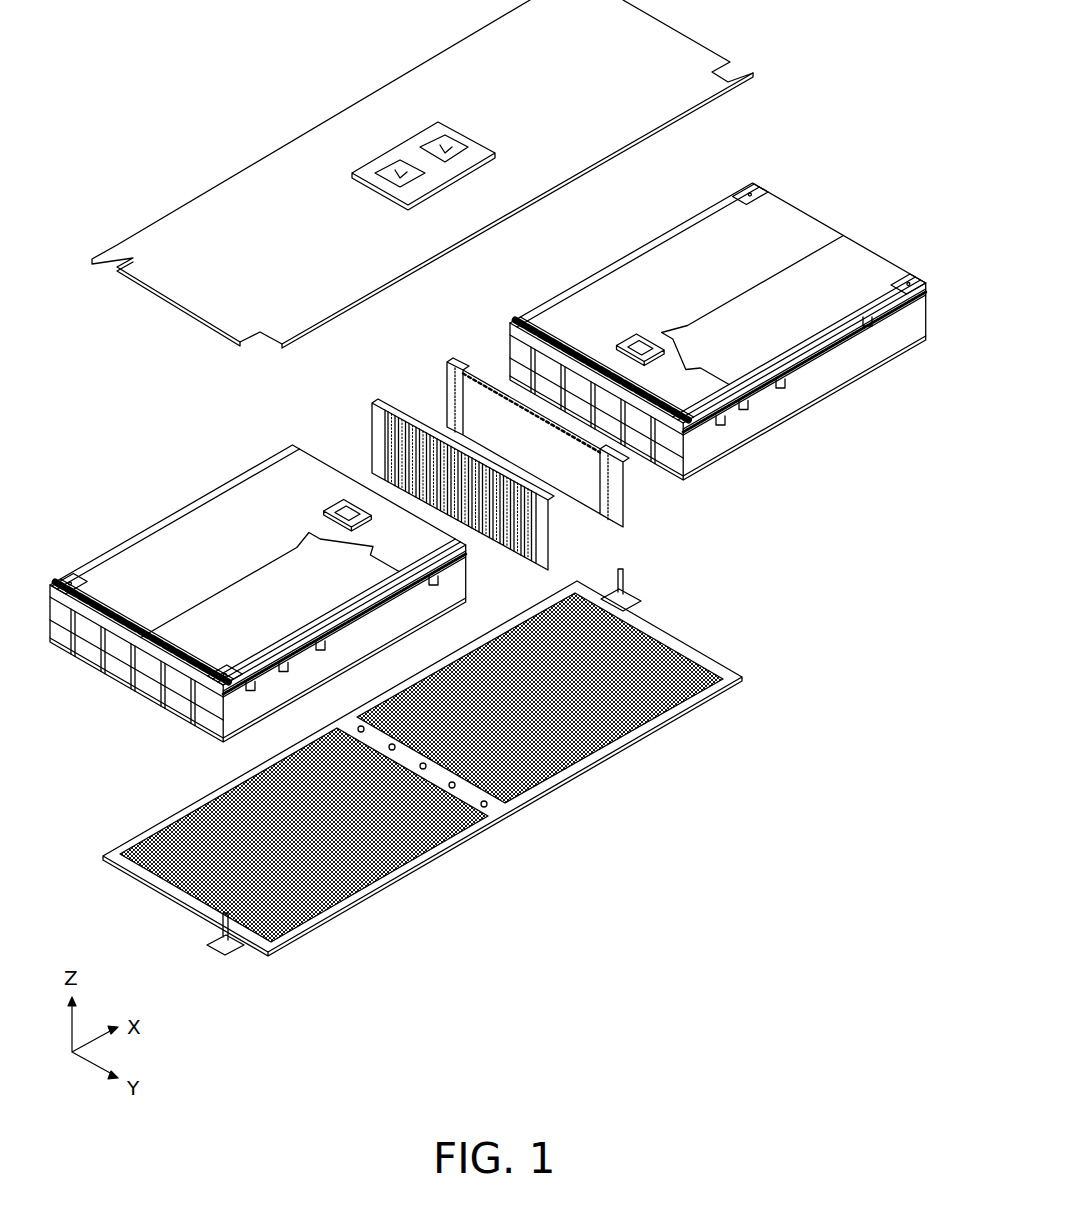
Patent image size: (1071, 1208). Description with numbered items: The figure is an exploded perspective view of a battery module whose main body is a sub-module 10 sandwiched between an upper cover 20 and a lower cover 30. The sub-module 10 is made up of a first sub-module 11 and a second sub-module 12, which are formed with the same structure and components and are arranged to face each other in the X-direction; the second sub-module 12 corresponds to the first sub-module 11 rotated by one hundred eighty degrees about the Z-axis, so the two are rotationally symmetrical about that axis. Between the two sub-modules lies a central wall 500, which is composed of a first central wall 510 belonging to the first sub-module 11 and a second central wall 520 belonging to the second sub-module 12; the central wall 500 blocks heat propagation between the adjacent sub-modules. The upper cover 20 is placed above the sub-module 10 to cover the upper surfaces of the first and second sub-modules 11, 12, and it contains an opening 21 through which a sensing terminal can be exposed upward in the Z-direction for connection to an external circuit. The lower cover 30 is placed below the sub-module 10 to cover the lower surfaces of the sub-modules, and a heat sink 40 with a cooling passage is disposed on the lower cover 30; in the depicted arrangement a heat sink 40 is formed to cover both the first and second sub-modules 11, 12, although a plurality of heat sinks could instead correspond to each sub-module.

The sub-module 10 is at (488, 538).
The first sub-module 11 is at (190, 523).
The second sub-module 12 is at (810, 392).
The upper cover 20 is at (293, 155).
The opening 21 is at (427, 143).
The lower cover 30 is at (330, 927).
The heat sink 40 is at (596, 743).
The central wall 500 is at (575, 688).
The first central wall 510 is at (368, 405).
The second central wall 520 is at (627, 498).